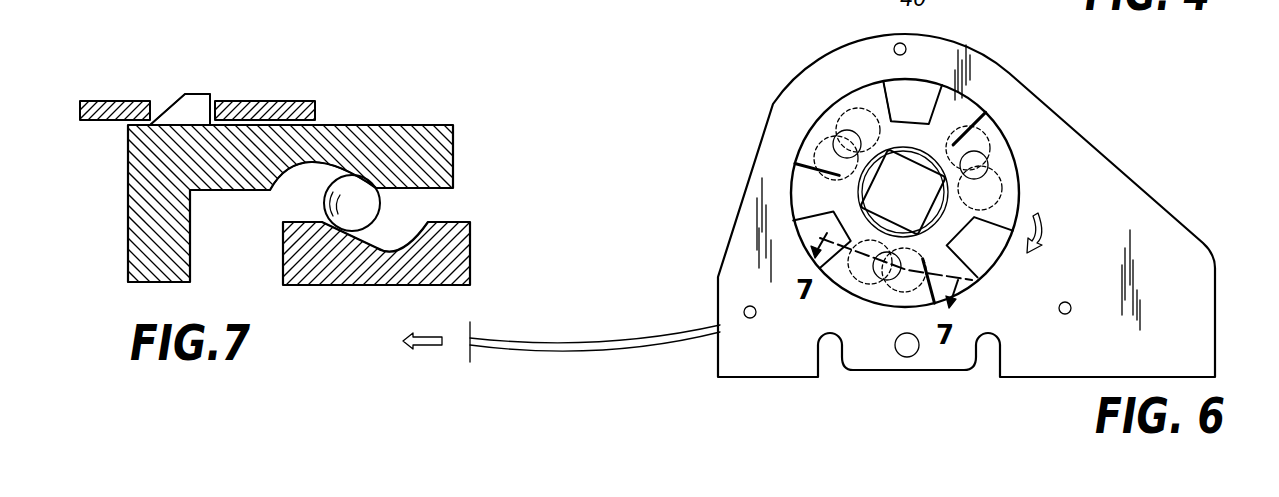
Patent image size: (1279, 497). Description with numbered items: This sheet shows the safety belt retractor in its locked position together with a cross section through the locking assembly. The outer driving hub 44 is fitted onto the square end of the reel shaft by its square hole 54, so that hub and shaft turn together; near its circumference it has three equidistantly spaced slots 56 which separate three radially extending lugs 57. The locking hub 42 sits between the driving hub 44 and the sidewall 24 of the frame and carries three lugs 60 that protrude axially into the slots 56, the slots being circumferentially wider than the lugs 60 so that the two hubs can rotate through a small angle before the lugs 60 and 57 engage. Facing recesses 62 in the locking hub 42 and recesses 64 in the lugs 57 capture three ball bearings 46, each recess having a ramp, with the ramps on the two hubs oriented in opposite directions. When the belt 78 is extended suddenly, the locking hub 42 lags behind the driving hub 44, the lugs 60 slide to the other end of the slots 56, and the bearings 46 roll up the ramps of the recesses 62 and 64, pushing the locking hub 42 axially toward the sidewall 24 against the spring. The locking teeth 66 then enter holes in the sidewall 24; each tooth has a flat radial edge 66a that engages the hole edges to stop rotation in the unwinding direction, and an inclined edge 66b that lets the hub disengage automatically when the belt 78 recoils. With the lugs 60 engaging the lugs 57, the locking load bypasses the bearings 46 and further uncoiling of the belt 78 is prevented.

In FIG. 7, the sidewall 24 is at (108, 99).
In FIG. 6, the sidewall 24 is at (1213, 288).
In FIG. 7, the locking hub 42 is at (128, 150).
In FIG. 7, the outer driving hub 44 is at (283, 280).
In FIG. 7, the ball bearings 46 is at (357, 192).
In FIG. 6, the square hole 54 is at (935, 297).
In FIG. 6, the slots 56 is at (802, 183).
In FIG. 6, the lugs 57 is at (855, 95).
In FIG. 7, the lugs 60 is at (128, 233).
In FIG. 6, the lugs 60 is at (803, 226).
In FIG. 7, the recesses 62 is at (285, 182).
In FIG. 6, the recesses 62 is at (859, 60).
In FIG. 7, the recesses 64 is at (420, 235).
In FIG. 7, the locking teeth 66 is at (196, 98).
In FIG. 7, the flat edge 66a is at (215, 96).
In FIG. 7, the inclined edge 66b is at (165, 98).
In FIG. 6, the belt 78 is at (562, 353).